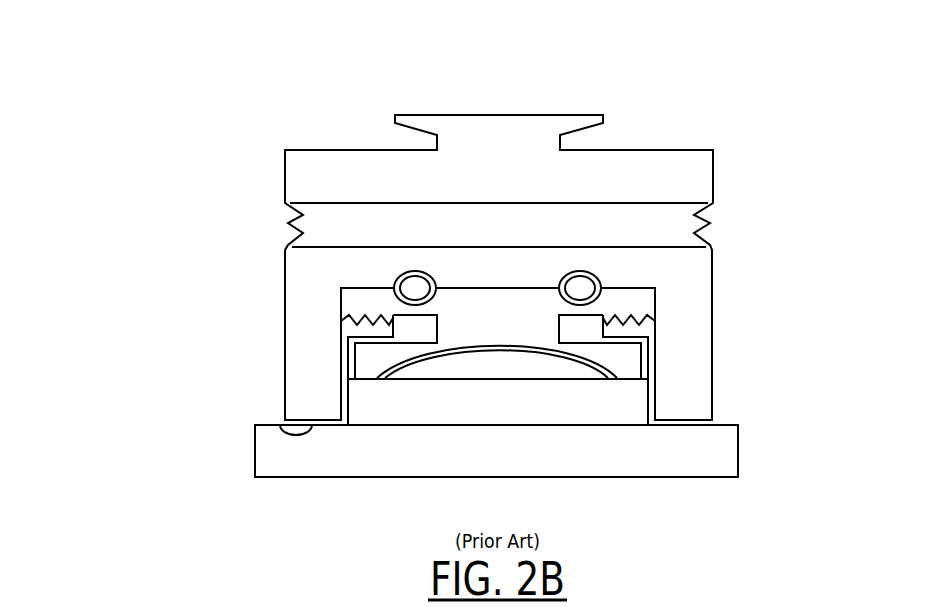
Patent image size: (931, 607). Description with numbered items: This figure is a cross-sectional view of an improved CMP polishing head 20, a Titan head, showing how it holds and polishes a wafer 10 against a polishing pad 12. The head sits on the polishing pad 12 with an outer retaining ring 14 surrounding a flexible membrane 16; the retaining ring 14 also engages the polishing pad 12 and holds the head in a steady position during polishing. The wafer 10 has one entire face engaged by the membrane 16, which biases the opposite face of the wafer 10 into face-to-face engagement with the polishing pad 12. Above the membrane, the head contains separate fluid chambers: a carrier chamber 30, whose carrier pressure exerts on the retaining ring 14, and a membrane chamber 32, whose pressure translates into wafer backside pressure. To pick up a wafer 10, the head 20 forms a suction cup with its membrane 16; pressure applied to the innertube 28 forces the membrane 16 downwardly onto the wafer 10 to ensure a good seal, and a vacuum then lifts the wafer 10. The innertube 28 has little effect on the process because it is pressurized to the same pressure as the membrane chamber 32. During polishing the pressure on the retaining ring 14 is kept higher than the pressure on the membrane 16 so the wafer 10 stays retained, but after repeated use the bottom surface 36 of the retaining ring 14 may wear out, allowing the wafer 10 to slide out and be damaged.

The wafer 10 is at (623, 403).
The polishing pad 12 is at (720, 453).
The retaining ring 14 is at (702, 307).
The flexible membrane 16 is at (600, 367).
The CMP head 20 is at (644, 52).
The innertube 28 is at (600, 282).
The carrier chamber 30 is at (337, 229).
The membrane chamber 32 is at (350, 303).
The bottom surface 36 is at (290, 430).